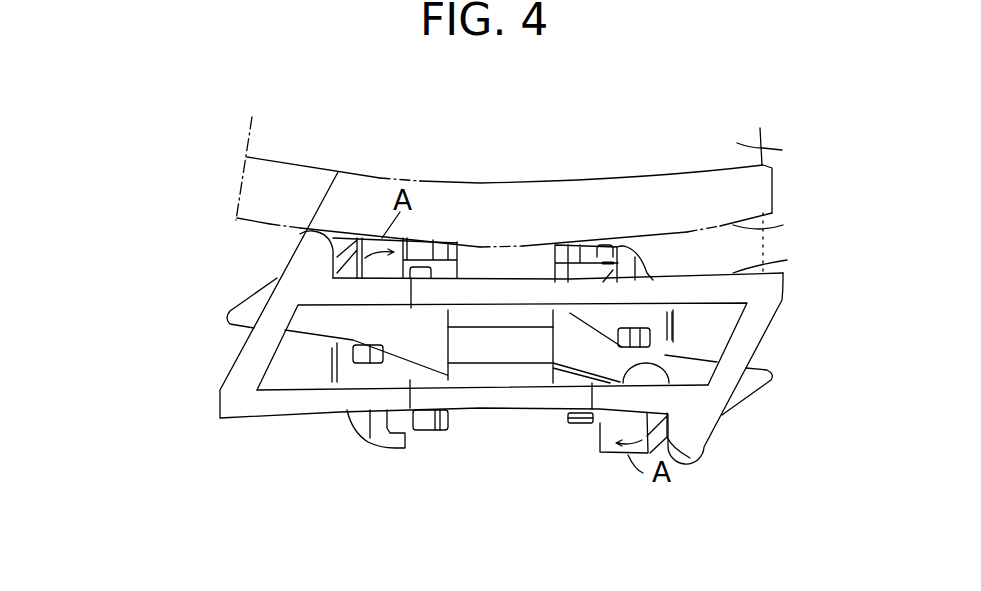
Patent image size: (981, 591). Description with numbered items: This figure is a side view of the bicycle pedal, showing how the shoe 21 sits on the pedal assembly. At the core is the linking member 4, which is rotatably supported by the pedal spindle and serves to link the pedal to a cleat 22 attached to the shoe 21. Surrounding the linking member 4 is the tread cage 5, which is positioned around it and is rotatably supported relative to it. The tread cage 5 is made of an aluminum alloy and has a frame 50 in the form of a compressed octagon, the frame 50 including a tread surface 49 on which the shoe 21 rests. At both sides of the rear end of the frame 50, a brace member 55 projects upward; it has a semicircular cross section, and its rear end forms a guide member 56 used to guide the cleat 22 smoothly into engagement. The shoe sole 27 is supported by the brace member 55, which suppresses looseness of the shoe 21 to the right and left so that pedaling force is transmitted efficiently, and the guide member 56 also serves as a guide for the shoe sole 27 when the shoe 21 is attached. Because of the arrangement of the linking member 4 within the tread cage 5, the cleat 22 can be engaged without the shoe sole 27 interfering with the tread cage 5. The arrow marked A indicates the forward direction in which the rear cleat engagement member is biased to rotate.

The linking member 4 is at (520, 255).
The tread cage 5 is at (796, 318).
The shoe 21 is at (782, 150).
The cleat 22 is at (592, 270).
The shoe sole 27 is at (797, 219).
The tread surface 49 is at (777, 258).
The frame 50 is at (300, 403).
The brace member 55 is at (300, 240).
The guide member 56 is at (338, 172).